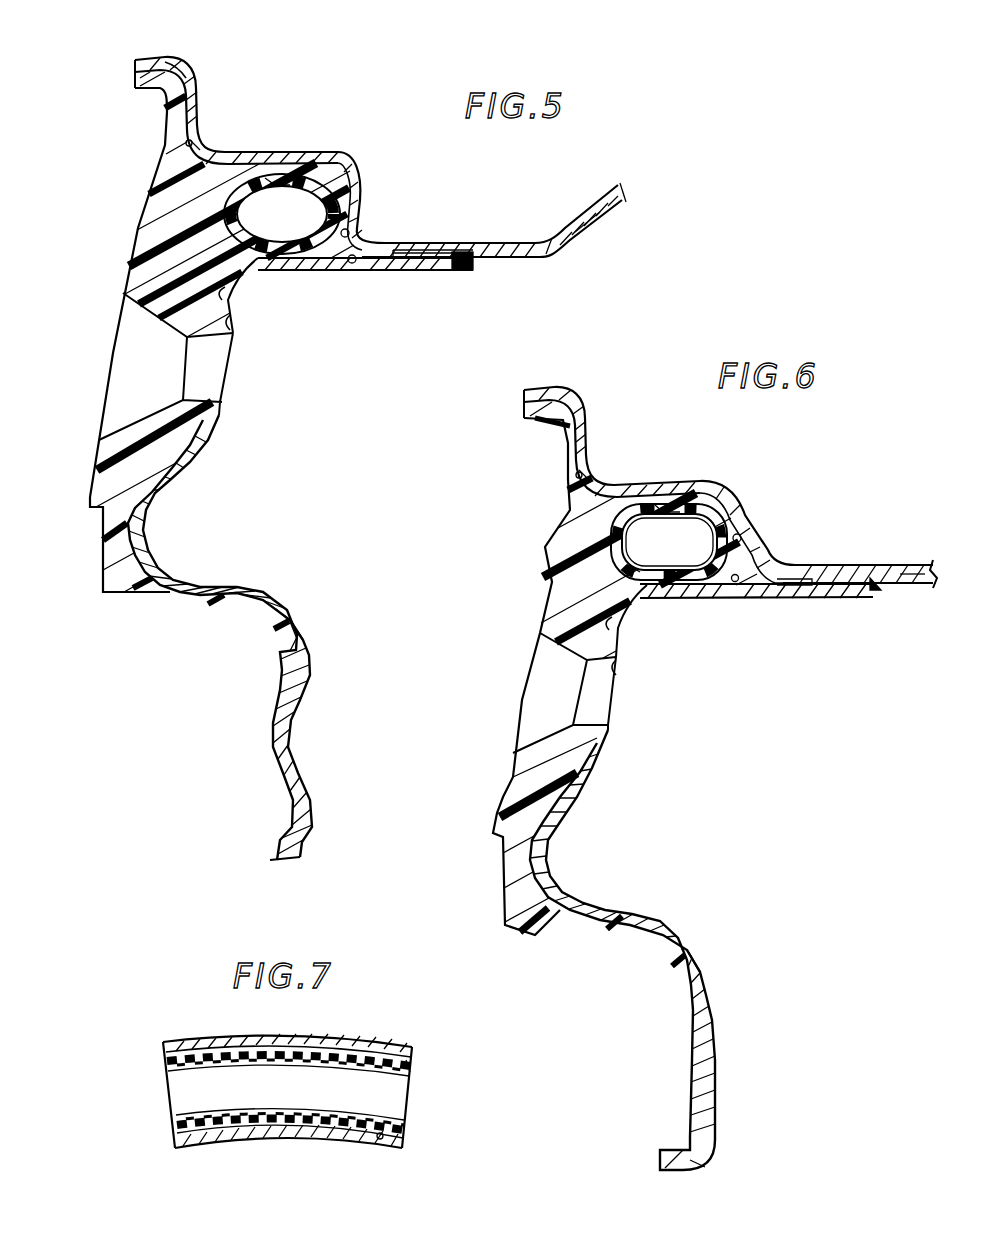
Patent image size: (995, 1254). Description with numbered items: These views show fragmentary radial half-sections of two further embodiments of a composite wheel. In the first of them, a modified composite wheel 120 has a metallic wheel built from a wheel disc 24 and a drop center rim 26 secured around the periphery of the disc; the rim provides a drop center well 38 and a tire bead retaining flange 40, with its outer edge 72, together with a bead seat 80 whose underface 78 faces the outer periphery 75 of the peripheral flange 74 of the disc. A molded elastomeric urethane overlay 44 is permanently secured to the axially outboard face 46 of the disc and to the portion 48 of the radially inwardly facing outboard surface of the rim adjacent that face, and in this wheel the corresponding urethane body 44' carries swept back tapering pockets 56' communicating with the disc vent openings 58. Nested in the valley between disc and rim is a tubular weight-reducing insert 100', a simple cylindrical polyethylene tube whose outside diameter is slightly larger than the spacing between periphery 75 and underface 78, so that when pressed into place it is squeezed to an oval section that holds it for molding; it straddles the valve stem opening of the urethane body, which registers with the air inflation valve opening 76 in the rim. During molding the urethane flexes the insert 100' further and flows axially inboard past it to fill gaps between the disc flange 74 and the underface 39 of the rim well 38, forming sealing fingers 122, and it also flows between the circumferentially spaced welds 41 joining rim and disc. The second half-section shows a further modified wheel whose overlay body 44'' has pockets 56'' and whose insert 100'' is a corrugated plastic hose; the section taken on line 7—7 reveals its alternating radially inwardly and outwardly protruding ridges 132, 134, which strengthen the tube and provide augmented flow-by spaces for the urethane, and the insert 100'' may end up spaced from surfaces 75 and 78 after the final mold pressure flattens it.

In FIG. 5, the wheel disc 24 is at (316, 603).
In FIG. 6, the wheel disc 24 is at (713, 940).
In FIG. 5, the drop center rim 26 is at (528, 238).
In FIG. 6, the drop center rim 26 is at (886, 552).
In FIG. 5, the drop center well 38 is at (450, 245).
In FIG. 6, the drop center well 38 is at (827, 566).
In FIG. 5, the underface of rim well 39 is at (398, 250).
In FIG. 6, the underface of rim well 39 is at (790, 579).
In FIG. 5, the tire bead retaining flange 40 is at (192, 78).
In FIG. 6, the tire bead retaining flange 40 is at (582, 398).
In FIG. 5, the welds 41 is at (478, 262).
In FIG. 6, the decorative plastic overlay 44 is at (607, 668).
In FIG. 5, the urethane body 44' is at (207, 332).
In FIG. 7, the overlay body 44'' is at (287, 1122).
In FIG. 5, the axially outboard face of disc 46 is at (222, 294).
In FIG. 6, the axially outboard face of disc 46 is at (608, 625).
In FIG. 5, the outboard surface portion of rim 48 is at (192, 142).
In FIG. 6, the outboard surface portion of rim 48 is at (593, 472).
In FIG. 5, the pocket 56' is at (181, 622).
In FIG. 6, the pocket 56'' is at (577, 939).
In FIG. 5, the disc vent opening 58 is at (232, 323).
In FIG. 6, the disc vent opening 58 is at (615, 683).
In FIG. 5, the curled lip 72 is at (172, 66).
In FIG. 5, the peripheral flange of disc 74 is at (393, 268).
In FIG. 6, the peripheral flange of disc 74 is at (790, 600).
In FIG. 7, the peripheral flange of disc 74 is at (308, 1145).
In FIG. 5, the outer periphery of disc flange 75 is at (353, 262).
In FIG. 6, the outer periphery of disc flange 75 is at (736, 583).
In FIG. 7, the outer periphery of disc flange 75 is at (379, 1139).
In FIG. 5, the air inflation valve opening 76 is at (352, 233).
In FIG. 6, the air inflation valve opening 76 is at (743, 536).
In FIG. 5, the underface of bead seat 78 is at (277, 185).
In FIG. 6, the underface of bead seat 78 is at (704, 497).
In FIG. 7, the underface of bead seat 78 is at (345, 1058).
In FIG. 5, the bead seat 80 is at (243, 160).
In FIG. 6, the bead seat 80 is at (633, 483).
In FIG. 7, the bead seat 80 is at (323, 1040).
In FIG. 5, the tubular weight-reducing insert 100' is at (369, 169).
In FIG. 6, the tubular weight-reduction insert 100'' is at (764, 508).
In FIG. 7, the tubular weight-reduction insert 100'' is at (462, 1055).
In FIG. 5, the modified composite wheel 120 is at (128, 48).
In FIG. 5, the sealing fingers 122 is at (455, 262).
In FIG. 6, the sealing fingers 122 is at (805, 584).
In FIG. 6, the radially inwardly protruding ridges 132 is at (624, 542).
In FIG. 7, the radially inwardly protruding ridges 132 is at (287, 1117).
In FIG. 6, the radially outwardly protruding ridges 134 is at (628, 565).
In FIG. 7, the radially outwardly protruding ridges 134 is at (368, 1117).
In FIG. 6, the section line 7 is at (653, 527).